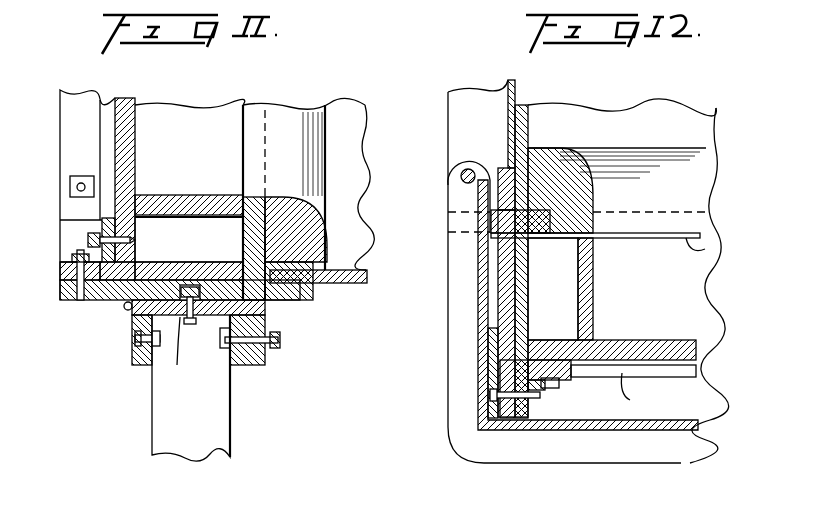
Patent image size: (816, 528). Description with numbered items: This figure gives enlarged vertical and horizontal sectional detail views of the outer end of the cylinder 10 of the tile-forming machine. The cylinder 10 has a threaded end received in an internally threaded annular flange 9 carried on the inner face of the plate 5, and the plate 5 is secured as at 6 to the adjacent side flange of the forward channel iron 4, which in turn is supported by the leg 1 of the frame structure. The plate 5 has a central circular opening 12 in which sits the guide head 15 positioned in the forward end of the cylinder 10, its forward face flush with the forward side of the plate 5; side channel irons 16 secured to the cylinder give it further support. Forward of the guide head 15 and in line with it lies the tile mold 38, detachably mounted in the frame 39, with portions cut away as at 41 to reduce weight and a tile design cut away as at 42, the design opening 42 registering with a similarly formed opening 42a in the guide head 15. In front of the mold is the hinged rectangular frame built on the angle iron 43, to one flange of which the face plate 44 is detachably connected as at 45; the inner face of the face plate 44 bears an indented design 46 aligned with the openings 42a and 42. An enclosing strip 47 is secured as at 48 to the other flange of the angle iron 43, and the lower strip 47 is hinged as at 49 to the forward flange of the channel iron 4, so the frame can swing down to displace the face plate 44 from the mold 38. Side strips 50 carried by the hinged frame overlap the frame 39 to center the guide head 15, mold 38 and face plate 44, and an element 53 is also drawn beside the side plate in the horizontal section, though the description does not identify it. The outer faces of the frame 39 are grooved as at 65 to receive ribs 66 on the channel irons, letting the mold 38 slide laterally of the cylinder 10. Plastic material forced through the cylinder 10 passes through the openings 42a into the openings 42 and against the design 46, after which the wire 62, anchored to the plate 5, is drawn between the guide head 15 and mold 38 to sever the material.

In FIG. 11, the supporting leg 1 is at (222, 438).
In FIG. 11, the forward channel iron 4 is at (143, 363).
In FIG. 11, the plate 5 is at (260, 367).
In FIG. 12, the plate 5 is at (533, 223).
In FIG. 11, the securing means 6 is at (283, 345).
In FIG. 11, the internally threaded annular flange 9 is at (300, 300).
In FIG. 12, the internally threaded annular flange 9 is at (501, 170).
In FIG. 11, the cylinder 10 is at (368, 282).
In FIG. 12, the cylinder 10 is at (528, 100).
In FIG. 11, the central circular opening 12 is at (272, 198).
In FIG. 11, the guide head 15 is at (303, 257).
In FIG. 12, the guide head 15 is at (558, 163).
In FIG. 12, the side channel iron 16 is at (458, 118).
In FIG. 11, the tile mold 38 is at (175, 263).
In FIG. 12, the tile mold 38 is at (511, 267).
In FIG. 11, the frame 39 is at (183, 354).
In FIG. 12, the frame 39 is at (511, 290).
In FIG. 11, the cutaway portion 41 is at (197, 225).
In FIG. 12, the cutaway portion 41 is at (553, 289).
In FIG. 11, the design opening 42 is at (180, 200).
In FIG. 12, the design opening 42 is at (593, 291).
In FIG. 11, the guide head opening 42a is at (290, 177).
In FIG. 12, the guide head opening 42a is at (596, 203).
In FIG. 11, the angle iron 43 is at (102, 222).
In FIG. 12, the angle iron 43 is at (637, 391).
In FIG. 11, the face plate 44 is at (115, 192).
In FIG. 12, the face plate 44 is at (696, 365).
In FIG. 11, the detachable connection 45 is at (88, 240).
In FIG. 12, the detachable connection 45 is at (548, 392).
In FIG. 11, the indented design 46 is at (128, 147).
In FIG. 12, the indented design 46 is at (653, 350).
In FIG. 11, the enclosing strip 47 is at (58, 290).
In FIG. 12, the enclosing strip 47 is at (480, 375).
In FIG. 11, the securing means 48 is at (70, 188).
In FIG. 12, the securing means 48 is at (545, 397).
In FIG. 11, the hinge 49 is at (125, 317).
In FIG. 12, the side strip 50 is at (478, 363).
In FIG. 12, the angle plate 53 is at (480, 197).
In FIG. 11, the wire 62 is at (270, 298).
In FIG. 12, the wire 62 is at (712, 248).
In FIG. 11, the longitudinal groove 65 is at (192, 288).
In FIG. 11, the longitudinal rib 66 is at (207, 300).